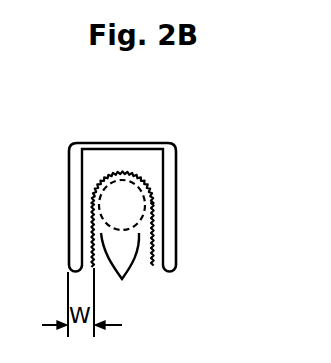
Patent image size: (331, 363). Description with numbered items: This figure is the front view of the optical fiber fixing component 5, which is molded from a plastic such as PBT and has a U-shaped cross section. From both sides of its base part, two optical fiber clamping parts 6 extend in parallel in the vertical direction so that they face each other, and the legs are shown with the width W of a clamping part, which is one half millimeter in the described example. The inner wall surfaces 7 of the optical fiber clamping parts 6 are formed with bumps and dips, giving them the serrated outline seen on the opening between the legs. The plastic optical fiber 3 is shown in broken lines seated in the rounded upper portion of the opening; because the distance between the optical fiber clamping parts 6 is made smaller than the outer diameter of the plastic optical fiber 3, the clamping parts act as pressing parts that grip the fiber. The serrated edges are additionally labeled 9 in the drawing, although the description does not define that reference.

The plastic optical fiber 3 is at (125, 195).
The optical fiber fixing component 5 is at (176, 190).
The optical fiber clamping parts 6 is at (90, 236).
The inner wall surfaces 7 is at (120, 273).
The serrated edges 9 is at (68, 207).